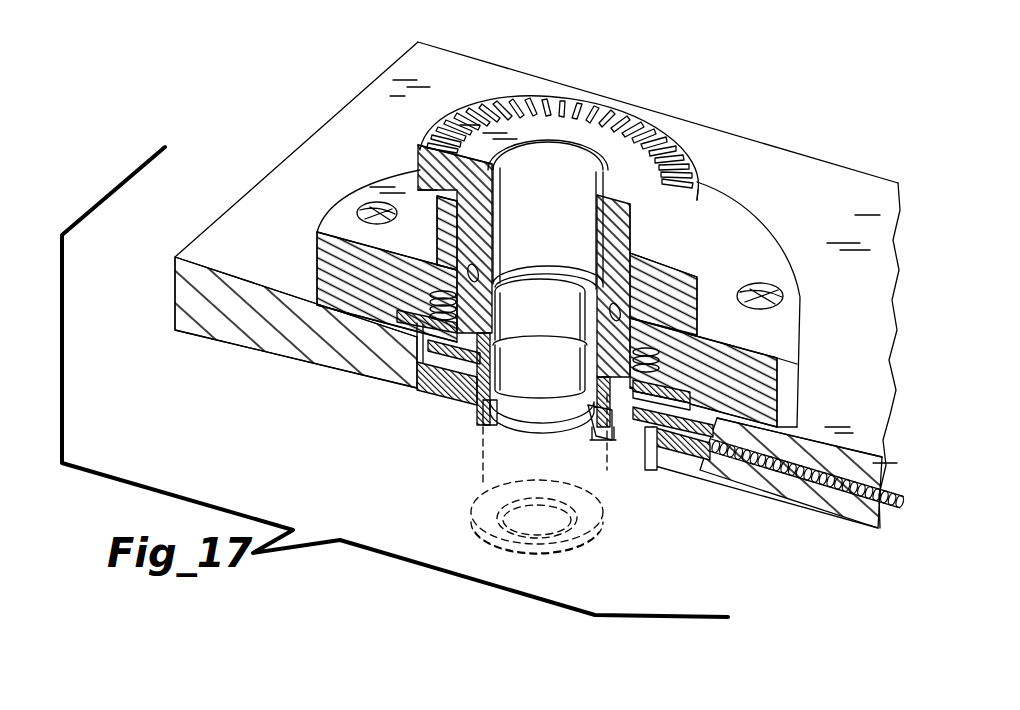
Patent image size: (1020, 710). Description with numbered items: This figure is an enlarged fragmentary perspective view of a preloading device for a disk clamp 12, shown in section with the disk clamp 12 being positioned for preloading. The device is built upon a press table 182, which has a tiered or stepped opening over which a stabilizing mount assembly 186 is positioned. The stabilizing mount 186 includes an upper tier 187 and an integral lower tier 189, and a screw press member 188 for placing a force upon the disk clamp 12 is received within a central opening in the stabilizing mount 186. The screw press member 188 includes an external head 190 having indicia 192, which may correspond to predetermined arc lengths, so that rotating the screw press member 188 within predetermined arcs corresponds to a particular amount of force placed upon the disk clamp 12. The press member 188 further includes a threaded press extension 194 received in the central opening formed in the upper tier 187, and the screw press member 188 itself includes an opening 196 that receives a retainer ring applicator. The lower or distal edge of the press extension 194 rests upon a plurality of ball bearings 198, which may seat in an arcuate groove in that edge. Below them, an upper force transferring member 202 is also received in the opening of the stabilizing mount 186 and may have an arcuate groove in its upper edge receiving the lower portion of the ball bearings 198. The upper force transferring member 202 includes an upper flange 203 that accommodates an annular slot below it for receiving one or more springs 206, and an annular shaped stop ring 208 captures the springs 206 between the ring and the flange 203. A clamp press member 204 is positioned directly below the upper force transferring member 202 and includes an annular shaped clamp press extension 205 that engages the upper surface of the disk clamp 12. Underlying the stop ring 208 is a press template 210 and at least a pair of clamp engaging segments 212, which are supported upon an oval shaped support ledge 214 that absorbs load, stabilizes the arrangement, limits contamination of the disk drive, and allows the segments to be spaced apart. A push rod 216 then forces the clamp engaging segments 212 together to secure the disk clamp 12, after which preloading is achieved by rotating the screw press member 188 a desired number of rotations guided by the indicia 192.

The disk clamp 12 is at (540, 570).
The press table 182 is at (215, 237).
The stabilizing mount assembly 186 is at (393, 170).
The upper tier 187 is at (352, 228).
The screw press member 188 is at (695, 156).
The lower tier 189 is at (317, 243).
The external head 190 is at (585, 177).
The indicia 192 is at (570, 102).
The threaded press extension 194 is at (575, 217).
The opening 196 is at (600, 175).
The ball bearings 198 is at (612, 300).
The upper force transferring member 202 is at (570, 315).
The upper flange 203 is at (358, 218).
The clamp press member 204 is at (575, 381).
The clamp press extension 205 is at (558, 428).
The springs 206 is at (317, 273).
The stop ring 208 is at (403, 332).
The press template 210 is at (427, 335).
The clamp engaging segments 212 is at (427, 393).
The support ledge 214 is at (470, 400).
The push rod 216 is at (850, 490).